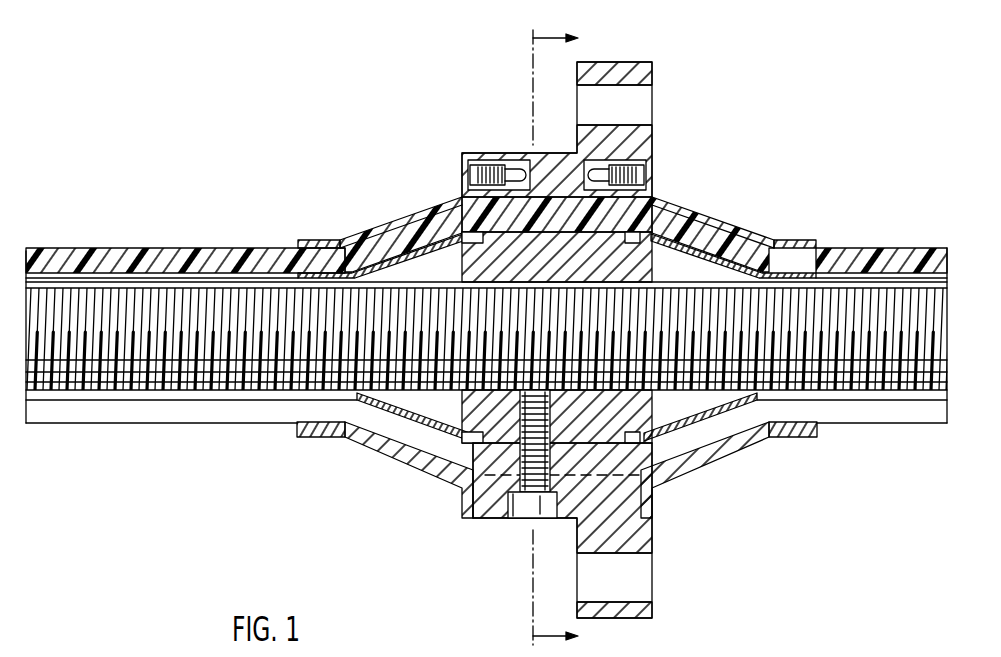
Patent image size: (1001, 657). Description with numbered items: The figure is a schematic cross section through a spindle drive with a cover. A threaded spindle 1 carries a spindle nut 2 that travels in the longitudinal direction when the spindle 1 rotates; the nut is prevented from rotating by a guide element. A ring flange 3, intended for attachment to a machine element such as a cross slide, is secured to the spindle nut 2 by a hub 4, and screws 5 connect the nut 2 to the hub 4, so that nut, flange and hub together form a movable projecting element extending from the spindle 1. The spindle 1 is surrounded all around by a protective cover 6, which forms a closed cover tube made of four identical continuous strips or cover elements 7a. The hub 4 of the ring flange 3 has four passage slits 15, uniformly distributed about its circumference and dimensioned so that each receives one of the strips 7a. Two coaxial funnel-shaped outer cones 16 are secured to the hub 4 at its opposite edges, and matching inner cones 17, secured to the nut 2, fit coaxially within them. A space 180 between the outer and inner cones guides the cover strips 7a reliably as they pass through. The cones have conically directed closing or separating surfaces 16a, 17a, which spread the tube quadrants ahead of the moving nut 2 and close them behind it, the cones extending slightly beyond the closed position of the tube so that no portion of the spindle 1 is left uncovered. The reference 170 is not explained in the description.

The threaded spindle 1 is at (938, 306).
The spindle nut 2 is at (653, 268).
The ring flange 3 is at (610, 70).
The hub 4 is at (494, 155).
The screws 5 is at (516, 500).
The protective cover 6 is at (951, 218).
The cover elements 7a is at (932, 257).
The passage slits 15 is at (650, 200).
The outer cones 16 is at (385, 230).
The closing or separating surfaces of outer cone 16a is at (413, 223).
The inner cones 17 is at (357, 252).
The closing or separating surfaces of inner cone 17a is at (380, 247).
The spring-loaded contact pin 170 is at (470, 170).
The space 180 is at (363, 260).